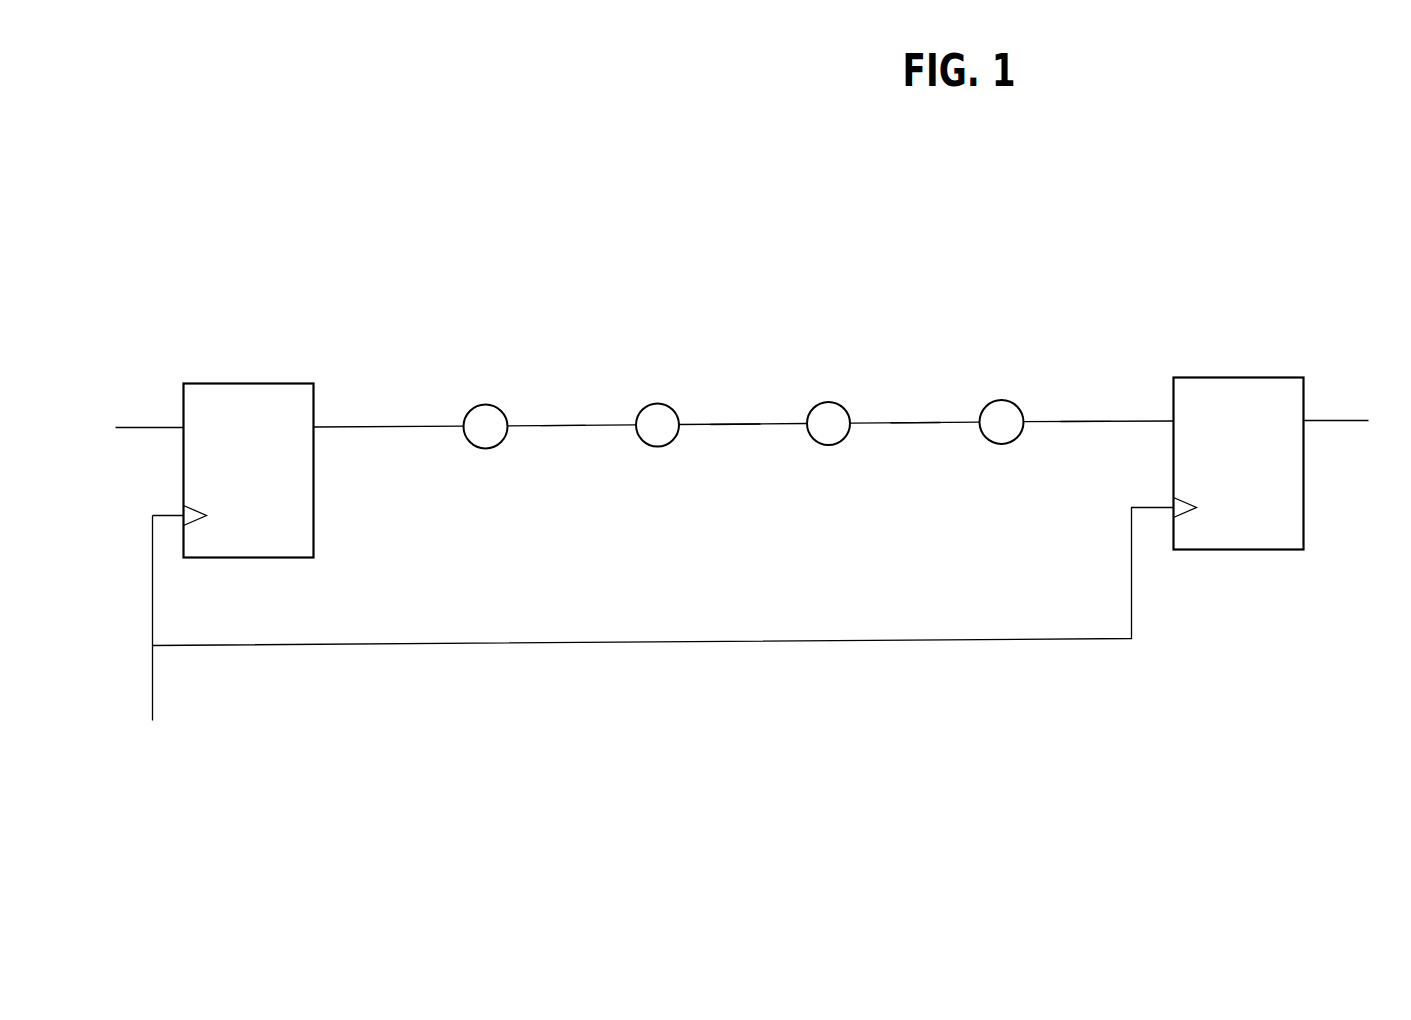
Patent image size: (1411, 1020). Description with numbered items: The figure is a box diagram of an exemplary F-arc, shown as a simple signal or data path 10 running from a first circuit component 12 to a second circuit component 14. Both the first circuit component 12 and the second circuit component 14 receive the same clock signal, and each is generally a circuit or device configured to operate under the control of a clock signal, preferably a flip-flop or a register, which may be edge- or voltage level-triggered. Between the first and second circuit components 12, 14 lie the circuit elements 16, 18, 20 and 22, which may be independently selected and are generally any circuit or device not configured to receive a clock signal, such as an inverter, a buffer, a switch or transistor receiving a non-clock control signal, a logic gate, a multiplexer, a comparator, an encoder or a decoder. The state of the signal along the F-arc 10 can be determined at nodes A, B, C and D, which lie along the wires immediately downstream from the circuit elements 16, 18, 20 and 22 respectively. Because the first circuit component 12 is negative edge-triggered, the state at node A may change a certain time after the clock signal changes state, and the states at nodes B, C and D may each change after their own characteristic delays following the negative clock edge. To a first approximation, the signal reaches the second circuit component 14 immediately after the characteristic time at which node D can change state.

The signal or data path 10 is at (400, 240).
The first circuit component 12 is at (268, 382).
The second circuit component 14 is at (1268, 376).
The circuit element 16 is at (485, 450).
The circuit element 18 is at (657, 447).
The circuit element 20 is at (825, 447).
The circuit element 22 is at (997, 447).
The node A is at (562, 423).
The node B is at (733, 422).
The node C is at (913, 422).
The node D is at (1087, 418).